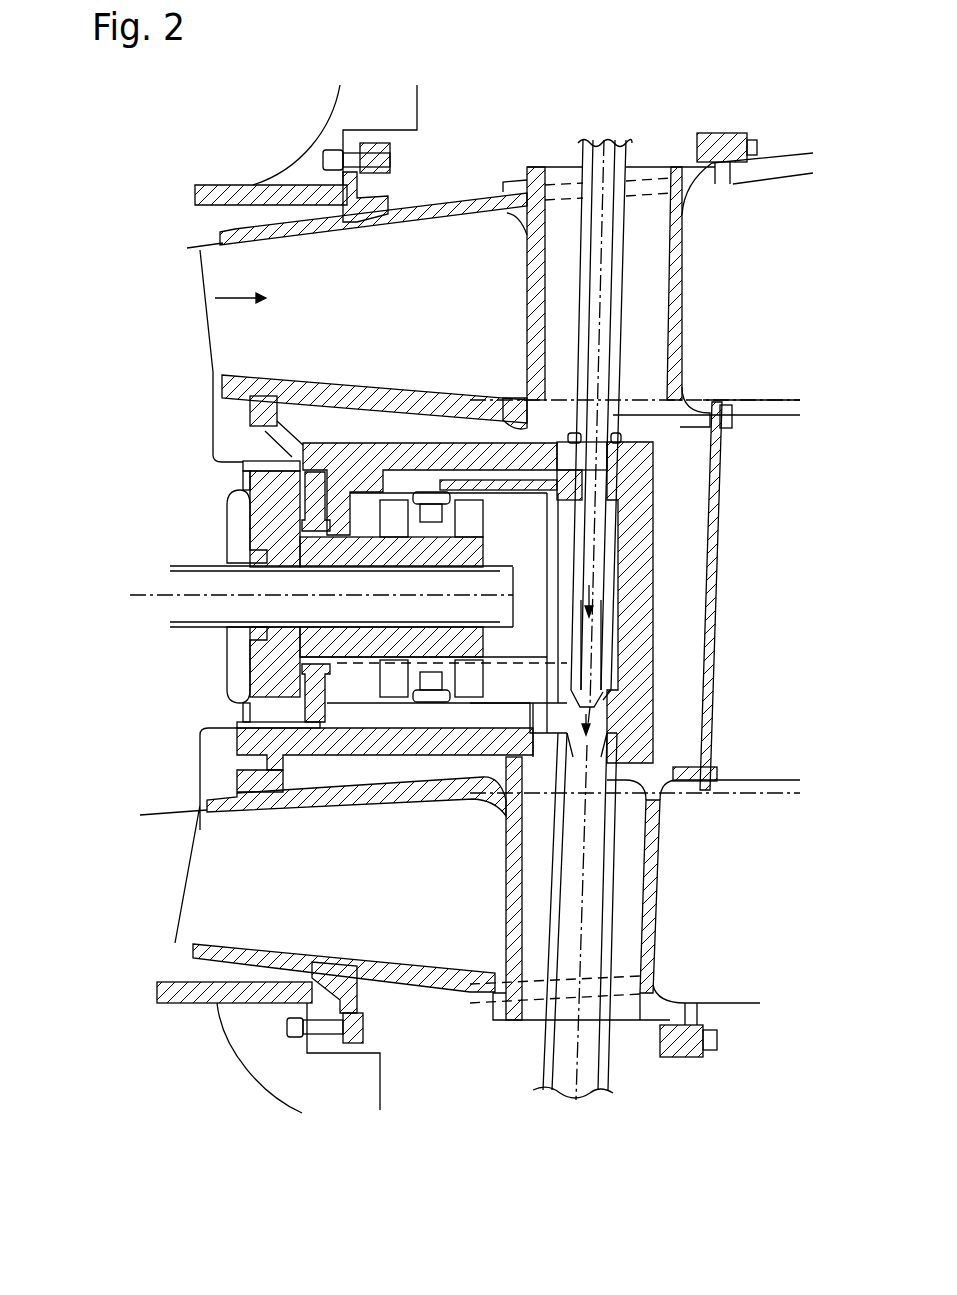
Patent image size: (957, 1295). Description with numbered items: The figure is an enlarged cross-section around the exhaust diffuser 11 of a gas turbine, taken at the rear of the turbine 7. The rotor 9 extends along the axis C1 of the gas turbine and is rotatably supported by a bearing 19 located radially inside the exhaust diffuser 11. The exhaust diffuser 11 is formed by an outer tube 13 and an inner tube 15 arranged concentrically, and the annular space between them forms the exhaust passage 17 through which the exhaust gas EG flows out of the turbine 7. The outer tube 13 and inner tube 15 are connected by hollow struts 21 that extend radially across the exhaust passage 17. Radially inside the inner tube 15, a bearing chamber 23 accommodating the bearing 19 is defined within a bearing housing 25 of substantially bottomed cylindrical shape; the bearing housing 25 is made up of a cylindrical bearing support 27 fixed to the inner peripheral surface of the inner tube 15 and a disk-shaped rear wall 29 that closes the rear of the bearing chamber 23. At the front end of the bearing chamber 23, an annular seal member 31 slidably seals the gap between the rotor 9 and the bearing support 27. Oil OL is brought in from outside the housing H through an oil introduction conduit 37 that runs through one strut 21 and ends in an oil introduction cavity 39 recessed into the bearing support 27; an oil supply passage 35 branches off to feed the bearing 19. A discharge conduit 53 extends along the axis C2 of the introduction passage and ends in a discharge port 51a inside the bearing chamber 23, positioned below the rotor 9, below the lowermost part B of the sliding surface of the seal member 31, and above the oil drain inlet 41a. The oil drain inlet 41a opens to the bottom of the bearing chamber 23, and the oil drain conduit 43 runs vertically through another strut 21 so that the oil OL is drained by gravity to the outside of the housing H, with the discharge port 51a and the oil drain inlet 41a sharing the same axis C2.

The housing H is at (340, 103).
The turbine 7 is at (197, 368).
The rotor 9 is at (190, 612).
The exhaust diffuser 11 is at (435, 195).
The outer tube 13 is at (410, 225).
The inner tube 15 is at (405, 380).
The exhaust passage 17 is at (330, 318).
The bearing 19 is at (375, 680).
The strut 21 is at (683, 232).
The bearing chamber 23 is at (555, 520).
The bearing housing 25 is at (655, 477).
The bearing support 27 is at (243, 463).
The rear wall 29 is at (637, 550).
The seal member 31 is at (322, 495).
The oil supply passage 35 is at (490, 478).
The oil introduction conduit 37 is at (618, 263).
The oil introduction cavity 39 is at (598, 412).
The oil drain inlet 41a is at (617, 733).
The oil drain conduit 43 is at (590, 935).
The discharge port 51a is at (595, 707).
The discharge conduit 53 is at (601, 602).
The lowermost part of sliding surface of seal member B is at (532, 655).
The axis C1 is at (165, 590).
The axis of oil introduction passage C2 is at (598, 305).
The exhaust gas EG is at (240, 296).
The oil OL is at (580, 562).